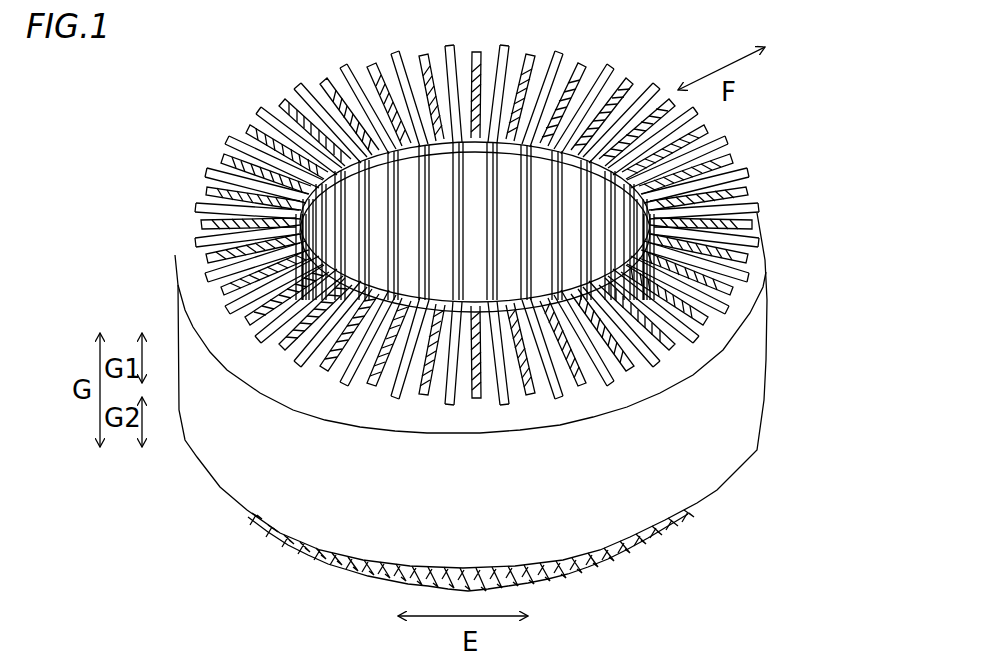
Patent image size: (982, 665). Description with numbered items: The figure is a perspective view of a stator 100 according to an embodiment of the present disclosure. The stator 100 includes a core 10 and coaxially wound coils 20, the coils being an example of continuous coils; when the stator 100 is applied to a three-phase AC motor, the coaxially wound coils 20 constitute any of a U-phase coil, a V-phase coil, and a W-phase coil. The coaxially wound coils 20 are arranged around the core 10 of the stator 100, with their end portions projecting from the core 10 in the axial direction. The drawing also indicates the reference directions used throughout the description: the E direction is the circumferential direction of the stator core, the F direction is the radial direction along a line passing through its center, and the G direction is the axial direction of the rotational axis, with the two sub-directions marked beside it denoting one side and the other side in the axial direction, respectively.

The stator 100 is at (541, 302).
The core 10 is at (768, 340).
The coaxially wound coils 20 is at (250, 110).